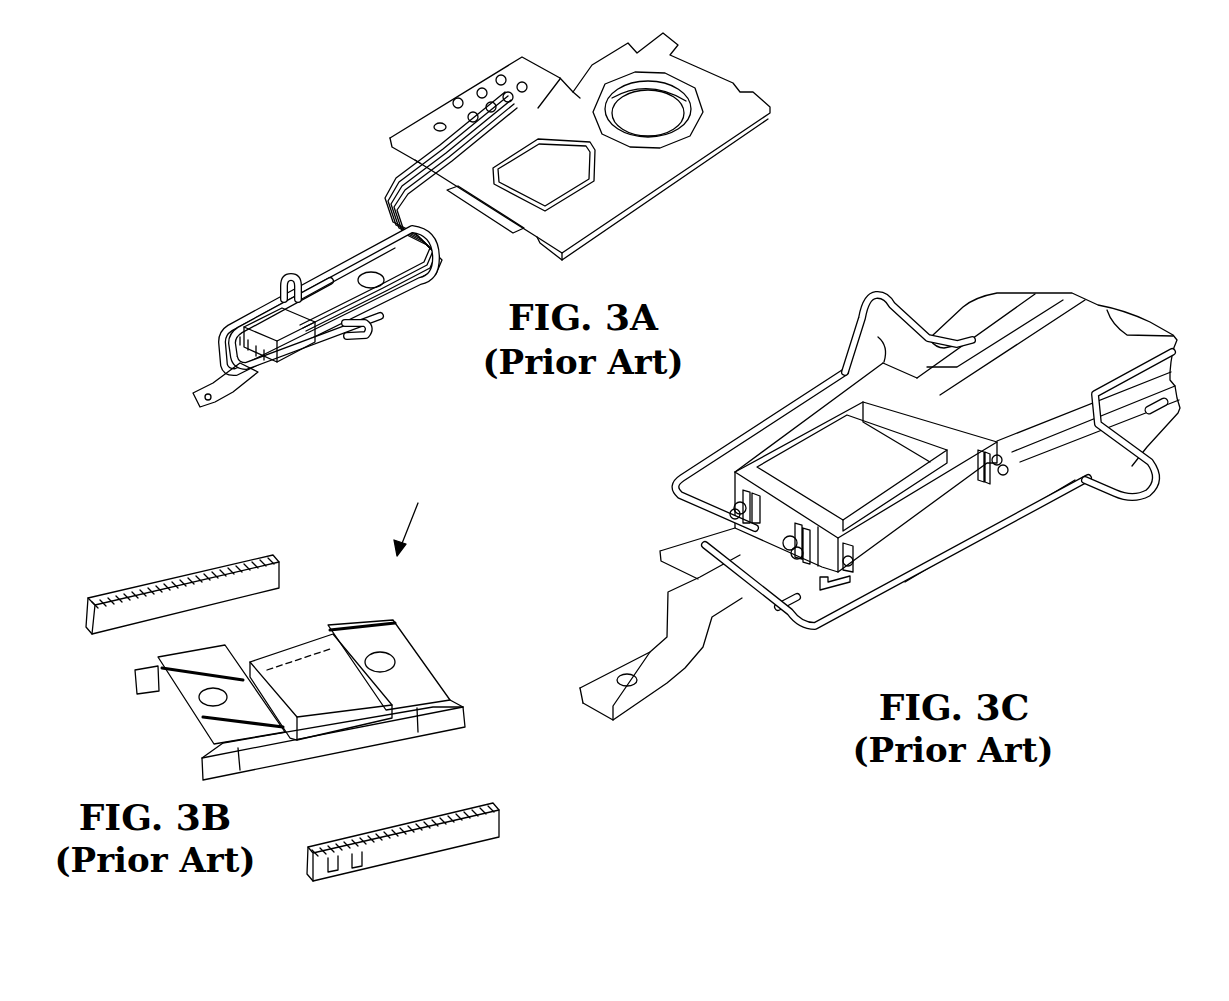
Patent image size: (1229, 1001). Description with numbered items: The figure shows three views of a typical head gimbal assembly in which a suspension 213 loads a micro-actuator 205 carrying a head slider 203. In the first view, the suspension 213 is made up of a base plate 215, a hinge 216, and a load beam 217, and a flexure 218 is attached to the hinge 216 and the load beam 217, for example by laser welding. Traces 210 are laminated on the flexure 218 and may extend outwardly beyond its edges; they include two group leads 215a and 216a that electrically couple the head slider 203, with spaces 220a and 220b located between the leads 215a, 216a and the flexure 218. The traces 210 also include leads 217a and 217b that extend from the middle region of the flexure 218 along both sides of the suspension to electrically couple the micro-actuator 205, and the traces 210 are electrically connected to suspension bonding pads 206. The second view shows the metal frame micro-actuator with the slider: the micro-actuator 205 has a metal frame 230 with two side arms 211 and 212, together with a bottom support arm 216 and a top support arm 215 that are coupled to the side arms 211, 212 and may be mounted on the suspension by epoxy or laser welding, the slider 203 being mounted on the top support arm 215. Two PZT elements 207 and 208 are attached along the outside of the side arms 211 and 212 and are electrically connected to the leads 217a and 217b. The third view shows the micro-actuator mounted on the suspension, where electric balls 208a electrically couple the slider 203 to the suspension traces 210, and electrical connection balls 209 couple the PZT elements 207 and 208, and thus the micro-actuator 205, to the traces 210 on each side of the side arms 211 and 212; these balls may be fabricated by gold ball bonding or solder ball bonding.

In FIG. 3A, the head slider 203 is at (258, 330).
In FIG. 3B, the head slider 203 is at (405, 662).
In FIG. 3C, the head slider 203 is at (788, 470).
In FIG. 3A, the micro-actuator 205 is at (272, 305).
In FIG. 3A, the suspension bonding pads 206 is at (500, 85).
In FIG. 3B, the PZT element 207 is at (225, 568).
In FIG. 3B, the PZT element 208 is at (477, 812).
In FIG. 3C, the electric balls 208a is at (745, 522).
In FIG. 3C, the electrical connection balls 209 is at (978, 512).
In FIG. 3A, the traces 210 is at (393, 204).
In FIG. 3B, the side arm 211 is at (140, 682).
In FIG. 3B, the side arm 212 is at (205, 768).
In FIG. 3A, the suspension 213 is at (598, 186).
In FIG. 3A, the base plate / top support arm 215 is at (695, 166).
In FIG. 3B, the base plate / top support arm 215 is at (356, 650).
In FIG. 3A, the group lead 215a is at (288, 275).
In FIG. 3C, the group lead 215a is at (893, 310).
In FIG. 3A, the hinge / bottom support arm 216 is at (585, 97).
In FIG. 3B, the hinge / bottom support arm 216 is at (195, 690).
In FIG. 3A, the group lead 216a is at (378, 328).
In FIG. 3C, the group lead 216a is at (1128, 503).
In FIG. 3A, the load beam 217 is at (212, 385).
In FIG. 3C, the lead 217a is at (1033, 330).
In FIG. 3C, the lead 217b is at (1090, 390).
In FIG. 3A, the flexure 218 is at (397, 257).
In FIG. 3C, the space 220a is at (700, 490).
In FIG. 3C, the space 220b is at (865, 600).
In FIG. 3B, the metal frame 230 is at (418, 515).